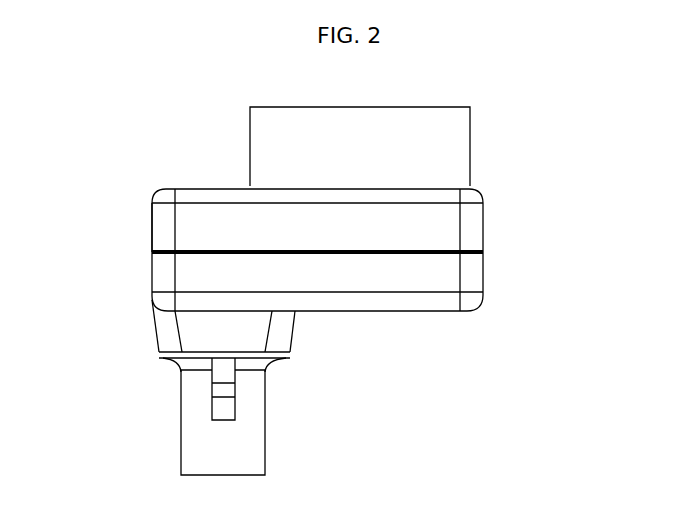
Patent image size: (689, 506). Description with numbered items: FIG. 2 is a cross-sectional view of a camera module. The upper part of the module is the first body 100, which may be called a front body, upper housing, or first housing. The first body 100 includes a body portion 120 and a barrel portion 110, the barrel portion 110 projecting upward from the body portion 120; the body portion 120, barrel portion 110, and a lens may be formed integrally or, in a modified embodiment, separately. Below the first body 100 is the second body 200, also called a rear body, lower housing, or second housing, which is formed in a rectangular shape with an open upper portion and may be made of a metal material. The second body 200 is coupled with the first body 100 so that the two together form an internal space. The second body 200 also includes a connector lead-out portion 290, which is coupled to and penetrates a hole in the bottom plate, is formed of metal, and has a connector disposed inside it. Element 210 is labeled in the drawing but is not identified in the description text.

The first body 100 is at (492, 211).
The barrel portion 110 is at (470, 135).
The body portion 120 is at (152, 220).
The second body 200 is at (492, 279).
The left end portion of lower body 210 is at (152, 273).
The connector lead-out portion 290 is at (265, 417).